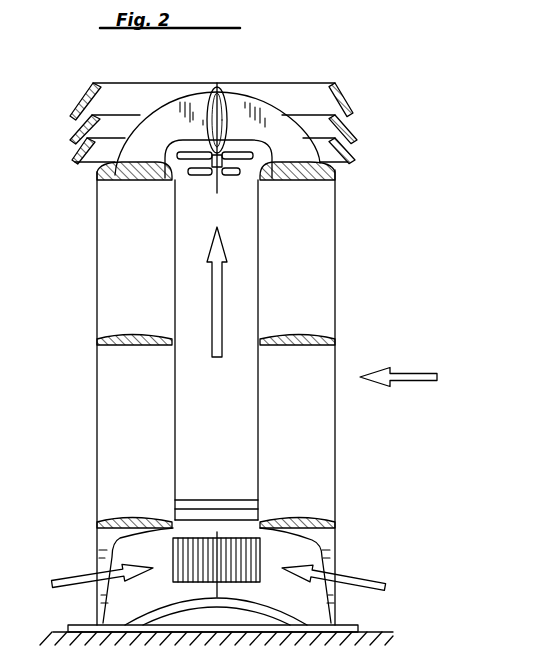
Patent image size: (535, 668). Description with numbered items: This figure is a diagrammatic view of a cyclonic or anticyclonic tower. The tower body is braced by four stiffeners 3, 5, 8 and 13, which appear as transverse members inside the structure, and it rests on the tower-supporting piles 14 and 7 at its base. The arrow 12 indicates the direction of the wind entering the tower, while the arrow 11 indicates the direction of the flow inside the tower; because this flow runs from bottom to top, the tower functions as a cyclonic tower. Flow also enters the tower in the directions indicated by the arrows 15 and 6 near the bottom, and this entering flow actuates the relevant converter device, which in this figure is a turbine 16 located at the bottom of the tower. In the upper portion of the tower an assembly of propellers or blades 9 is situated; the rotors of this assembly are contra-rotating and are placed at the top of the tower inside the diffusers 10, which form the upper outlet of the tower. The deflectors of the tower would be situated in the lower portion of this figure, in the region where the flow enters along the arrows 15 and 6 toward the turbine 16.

The stiffener 3 is at (317, 340).
The stiffener 5 is at (112, 338).
The arrow 6 is at (66, 585).
The tower-supporting pile 7 is at (110, 538).
The stiffener 8 is at (312, 522).
The assembly of propellers or blades 9 is at (178, 140).
The diffusers 10 is at (352, 100).
The arrow 11 is at (215, 307).
The arrow 12 is at (410, 378).
The stiffener 13 is at (118, 522).
The tower-supporting pile 14 is at (320, 540).
The arrow 15 is at (356, 583).
The turbine 16 is at (258, 573).